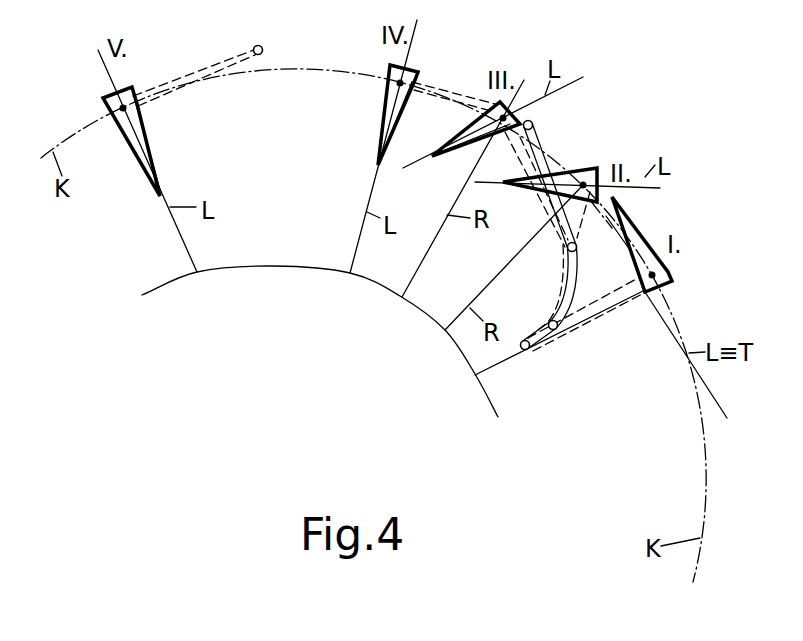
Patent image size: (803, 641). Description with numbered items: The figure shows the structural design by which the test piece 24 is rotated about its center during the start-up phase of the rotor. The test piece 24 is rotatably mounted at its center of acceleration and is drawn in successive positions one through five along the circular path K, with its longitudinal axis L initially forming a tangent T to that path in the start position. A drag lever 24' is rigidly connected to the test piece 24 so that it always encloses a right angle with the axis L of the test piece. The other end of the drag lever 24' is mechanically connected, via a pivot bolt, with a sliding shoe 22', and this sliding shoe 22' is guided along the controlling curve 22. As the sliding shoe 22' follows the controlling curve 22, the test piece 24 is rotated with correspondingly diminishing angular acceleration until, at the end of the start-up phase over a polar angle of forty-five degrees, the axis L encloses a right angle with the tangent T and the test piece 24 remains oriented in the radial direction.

The test piece 24 is at (413, 178).
The drag lever 24' is at (393, 187).
The controlling curve 22 is at (572, 233).
The sliding shoe 22' is at (417, 210).